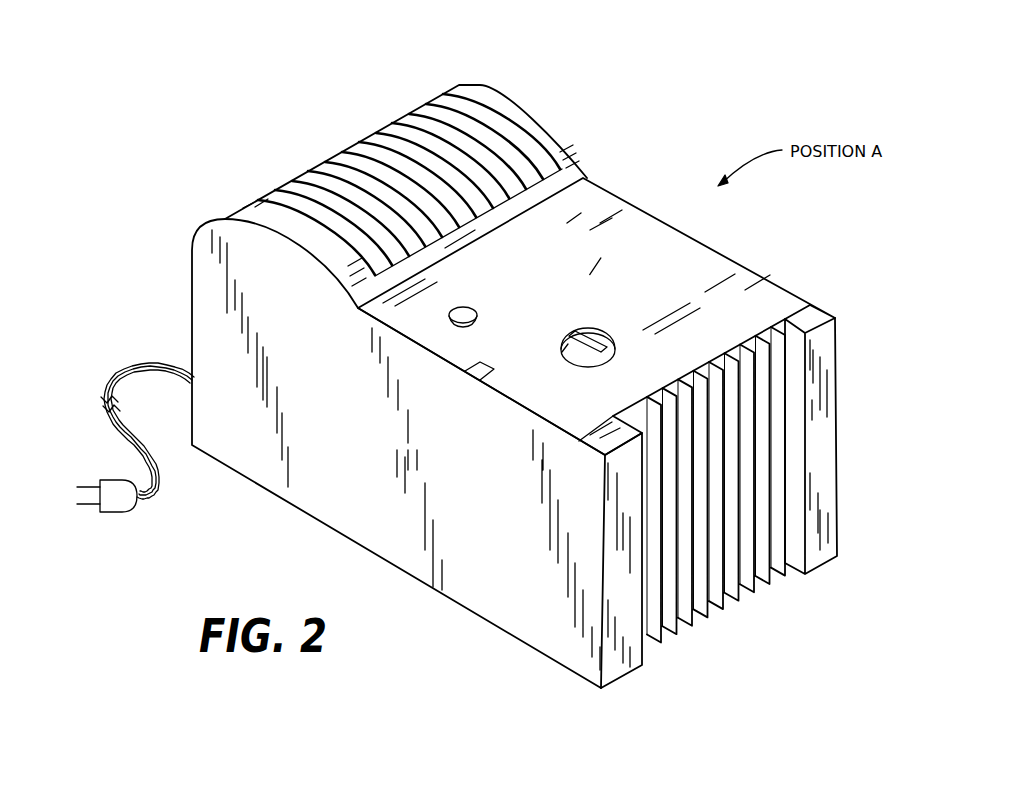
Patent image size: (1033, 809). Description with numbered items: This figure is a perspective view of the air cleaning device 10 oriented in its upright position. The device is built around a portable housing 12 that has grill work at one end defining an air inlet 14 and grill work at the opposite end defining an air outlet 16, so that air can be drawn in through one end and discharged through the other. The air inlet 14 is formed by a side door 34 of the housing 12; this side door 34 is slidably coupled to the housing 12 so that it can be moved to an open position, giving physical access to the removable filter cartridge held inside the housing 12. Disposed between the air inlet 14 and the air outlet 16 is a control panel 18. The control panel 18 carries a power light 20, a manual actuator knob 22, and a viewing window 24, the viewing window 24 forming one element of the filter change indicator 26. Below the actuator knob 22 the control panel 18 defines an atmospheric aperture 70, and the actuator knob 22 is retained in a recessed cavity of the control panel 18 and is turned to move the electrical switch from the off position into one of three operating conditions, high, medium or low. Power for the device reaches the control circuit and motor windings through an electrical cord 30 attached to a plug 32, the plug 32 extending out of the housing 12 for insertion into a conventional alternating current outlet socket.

The air cleaning device 10 is at (457, 383).
The portable housing 12 is at (190, 282).
The air inlet 14 is at (749, 587).
The air outlet 16 is at (398, 130).
The control panel 18 is at (596, 316).
The power light 20 is at (478, 362).
The manual actuator knob 22 is at (594, 338).
The viewing window 24 is at (449, 313).
The filter change indicator 26 is at (482, 306).
The electrical cord 30 is at (143, 365).
The plug 32 is at (110, 513).
The side door 34 is at (786, 335).
The atmospheric aperture 70 is at (562, 348).